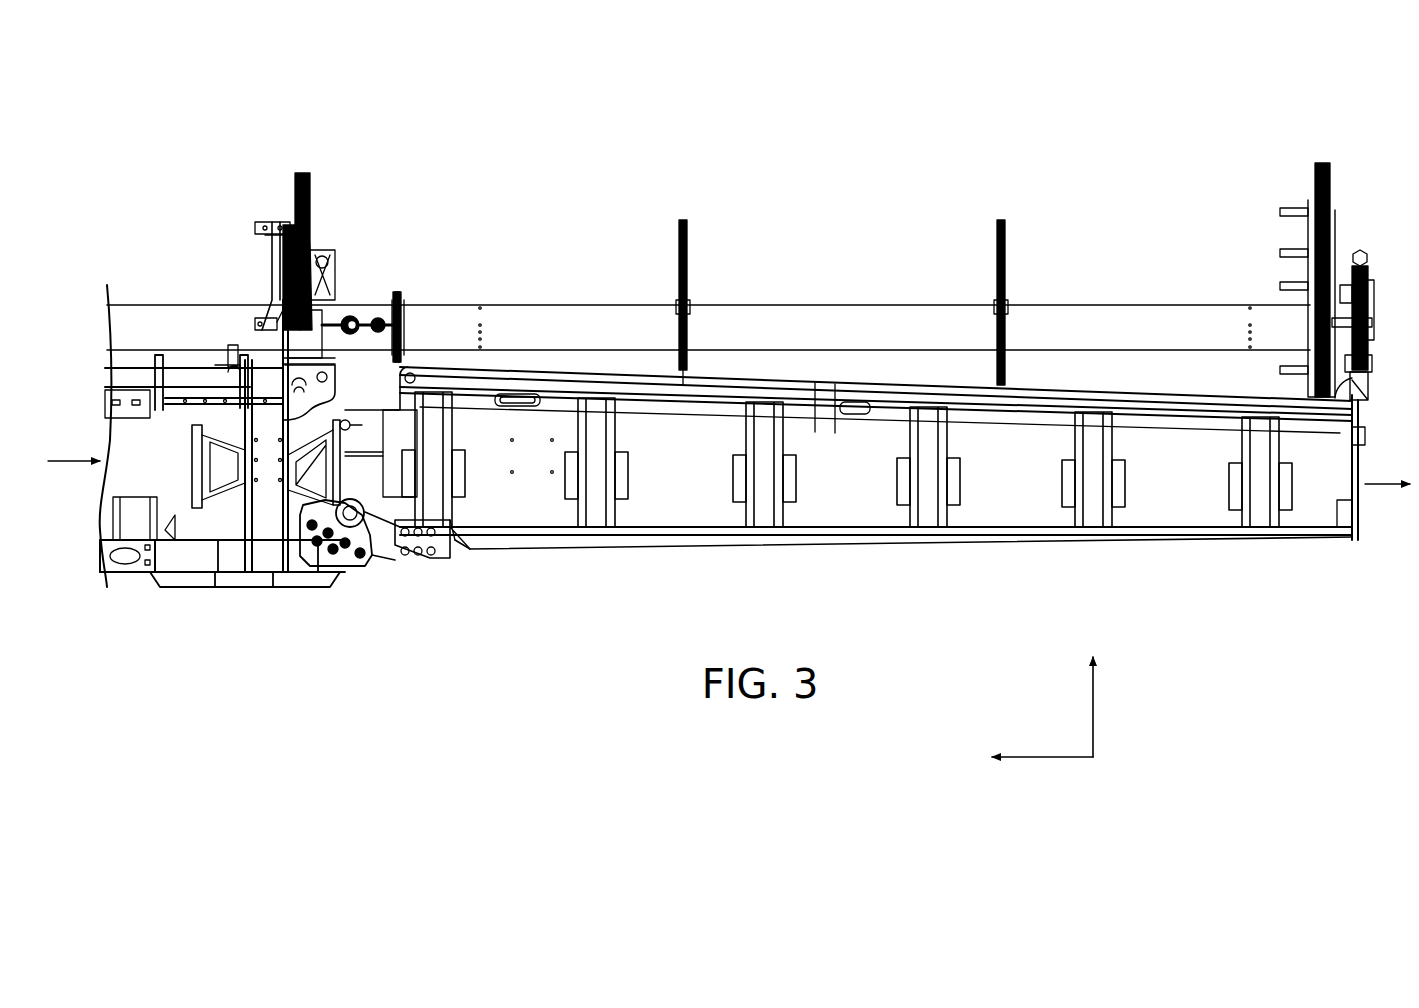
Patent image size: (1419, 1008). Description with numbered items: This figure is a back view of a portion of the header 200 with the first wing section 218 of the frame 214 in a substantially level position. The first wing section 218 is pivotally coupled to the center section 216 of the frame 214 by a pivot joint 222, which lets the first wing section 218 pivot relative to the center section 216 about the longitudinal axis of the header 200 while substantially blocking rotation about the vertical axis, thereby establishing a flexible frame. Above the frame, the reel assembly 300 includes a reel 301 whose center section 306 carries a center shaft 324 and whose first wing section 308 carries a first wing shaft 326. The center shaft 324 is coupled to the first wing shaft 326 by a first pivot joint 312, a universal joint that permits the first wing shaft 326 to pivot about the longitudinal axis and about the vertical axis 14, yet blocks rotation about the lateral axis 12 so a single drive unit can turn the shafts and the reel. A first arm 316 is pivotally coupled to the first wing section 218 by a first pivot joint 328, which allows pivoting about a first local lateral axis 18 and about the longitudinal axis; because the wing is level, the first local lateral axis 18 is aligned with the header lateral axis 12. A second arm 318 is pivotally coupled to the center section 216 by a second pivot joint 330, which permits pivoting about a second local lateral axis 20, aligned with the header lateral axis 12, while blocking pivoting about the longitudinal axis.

The header lateral axis 12 is at (1046, 760).
The vertical axis 14 is at (1094, 712).
The first local lateral axis 18 is at (1368, 486).
The second local lateral axis 20 is at (72, 462).
The header 200 is at (347, 183).
The frame 214 is at (311, 600).
The center section 216 is at (191, 556).
The first wing section 218 is at (960, 537).
The pivot joint 222 is at (370, 548).
The reel assembly 300 is at (1354, 190).
The reel 301 is at (914, 274).
The center section of the reel 306 is at (207, 216).
The first wing section of the reel 308 is at (1092, 291).
The first pivot joint 312 is at (352, 323).
The first arm 316 is at (1352, 346).
The second arm 318 is at (281, 295).
The center shaft 324 is at (153, 326).
The first wing shaft 326 is at (822, 322).
The first pivot joint 328 is at (1368, 369).
The second pivot joint 330 is at (336, 360).